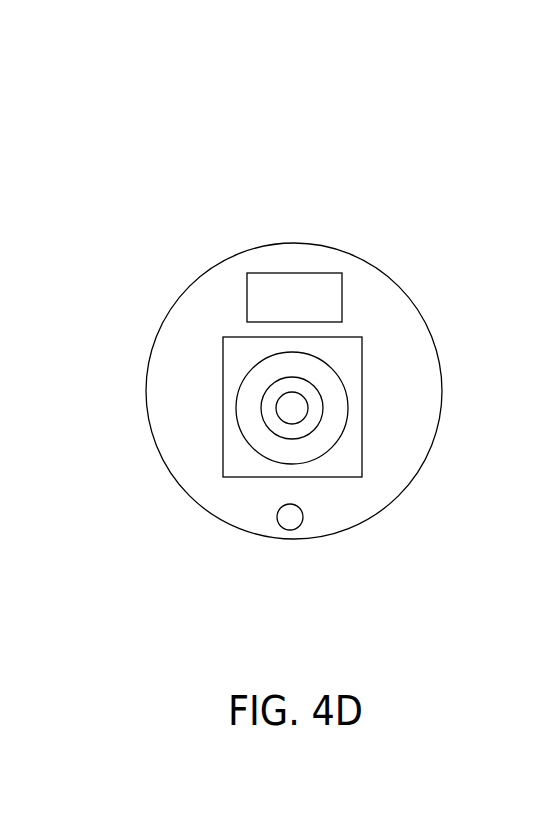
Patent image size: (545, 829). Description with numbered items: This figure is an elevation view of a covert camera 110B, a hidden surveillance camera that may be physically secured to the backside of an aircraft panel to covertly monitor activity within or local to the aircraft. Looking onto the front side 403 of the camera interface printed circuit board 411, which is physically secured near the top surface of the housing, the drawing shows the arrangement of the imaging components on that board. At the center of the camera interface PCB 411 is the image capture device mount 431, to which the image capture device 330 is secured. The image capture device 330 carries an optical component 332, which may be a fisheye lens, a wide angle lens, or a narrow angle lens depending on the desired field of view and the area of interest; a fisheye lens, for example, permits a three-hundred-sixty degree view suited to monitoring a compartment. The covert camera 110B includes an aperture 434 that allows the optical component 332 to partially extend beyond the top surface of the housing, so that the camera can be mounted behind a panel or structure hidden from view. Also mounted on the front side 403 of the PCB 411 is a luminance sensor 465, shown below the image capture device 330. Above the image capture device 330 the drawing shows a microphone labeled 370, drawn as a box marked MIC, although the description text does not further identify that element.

The covert camera 110B is at (402, 123).
The front side of camera interface PCB 403 is at (402, 228).
The camera interface printed circuit board 411 is at (421, 313).
The microphone 370 is at (294, 273).
The image capture device mount 431 is at (362, 368).
The aperture 434 is at (337, 442).
The image capture device 330 is at (267, 389).
The optical component 332 is at (278, 416).
The luminance sensor 465 is at (290, 530).